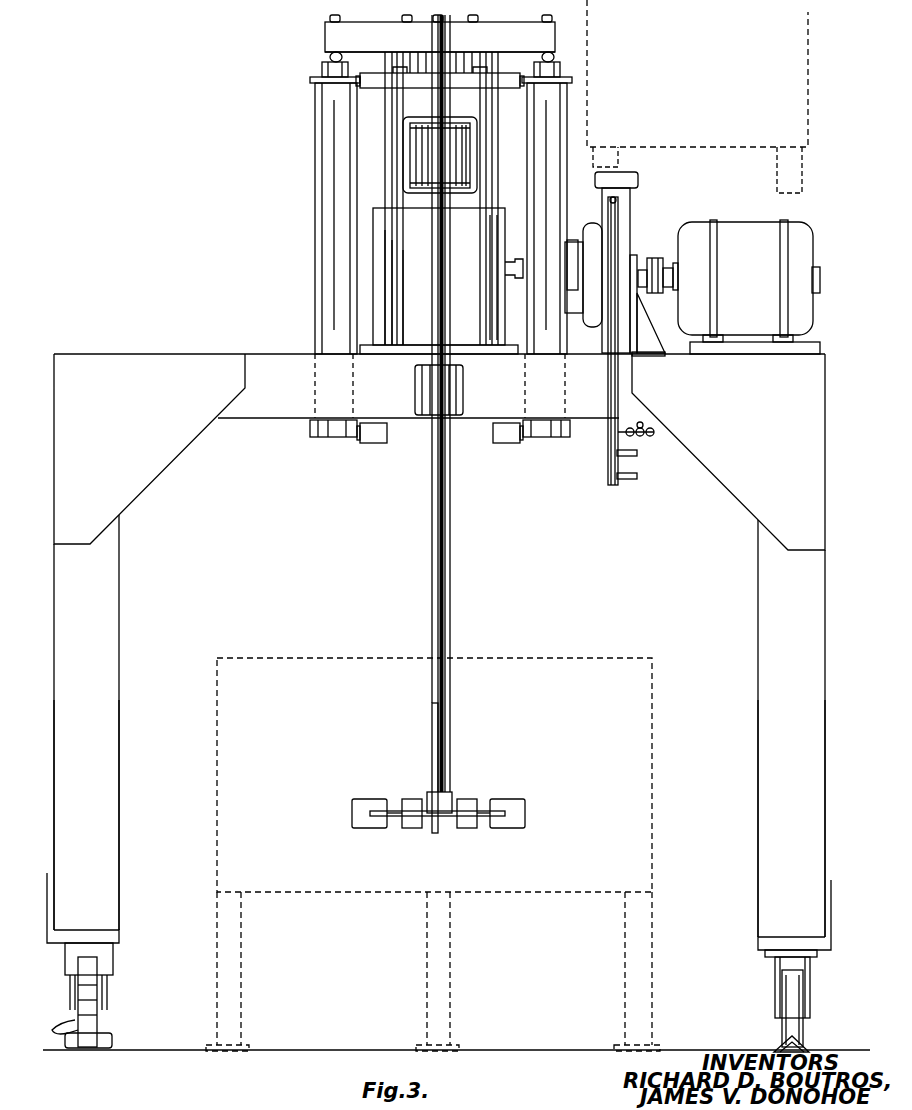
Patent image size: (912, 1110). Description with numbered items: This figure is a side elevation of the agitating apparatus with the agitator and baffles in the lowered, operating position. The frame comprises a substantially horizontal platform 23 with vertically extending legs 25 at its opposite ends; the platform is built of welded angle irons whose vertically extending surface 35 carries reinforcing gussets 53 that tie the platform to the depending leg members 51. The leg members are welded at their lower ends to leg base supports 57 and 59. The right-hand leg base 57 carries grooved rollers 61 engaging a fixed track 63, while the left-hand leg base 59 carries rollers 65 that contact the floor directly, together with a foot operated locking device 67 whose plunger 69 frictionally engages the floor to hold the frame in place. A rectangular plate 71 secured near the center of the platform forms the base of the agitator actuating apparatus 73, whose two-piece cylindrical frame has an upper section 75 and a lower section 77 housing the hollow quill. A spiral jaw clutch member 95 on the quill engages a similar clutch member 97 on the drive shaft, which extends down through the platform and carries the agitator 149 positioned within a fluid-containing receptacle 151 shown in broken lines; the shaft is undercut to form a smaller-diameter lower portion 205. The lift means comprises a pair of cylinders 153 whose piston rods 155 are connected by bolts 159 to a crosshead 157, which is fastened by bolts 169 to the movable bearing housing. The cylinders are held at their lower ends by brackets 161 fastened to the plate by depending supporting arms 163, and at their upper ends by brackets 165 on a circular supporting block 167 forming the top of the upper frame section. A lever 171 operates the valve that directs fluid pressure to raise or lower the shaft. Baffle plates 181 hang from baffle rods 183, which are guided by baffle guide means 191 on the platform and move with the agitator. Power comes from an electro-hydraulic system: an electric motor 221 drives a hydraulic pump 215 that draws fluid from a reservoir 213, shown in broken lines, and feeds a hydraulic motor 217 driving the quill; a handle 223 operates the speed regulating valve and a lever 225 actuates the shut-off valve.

The platform 23 is at (262, 342).
The legs 25 is at (130, 597).
The vertically extending surface 35 is at (288, 405).
The leg members 51 is at (100, 680).
The reinforcing gussets 53 is at (150, 452).
The leg base support 57 is at (768, 945).
The leg base support 59 is at (108, 940).
The grooved rollers 61 is at (788, 1027).
The fixed track 63 is at (782, 1050).
The rollers 65 is at (98, 1022).
The foot operated locking device 67 is at (58, 1028).
The plunger 69 is at (110, 1043).
The rectangular plate 71 is at (495, 354).
The actuating apparatus 73 is at (382, 145).
The upper cylinder frame section 75 is at (490, 146).
The lower cylinder frame section 77 is at (503, 220).
The spiral jaw clutch member 95 is at (420, 175).
The spiral jaw clutch member 97 is at (432, 160).
The agitator 149 is at (512, 813).
The fluid-containing receptacle 151 is at (460, 854).
The cylinders 153 is at (332, 180).
The piston rods 155 is at (328, 60).
The crosshead 157 is at (555, 38).
The bolts 159 is at (330, 20).
The brackets 161 is at (330, 440).
The depending supporting arms 163 is at (374, 444).
The brackets 165 is at (312, 80).
The circular supporting block 167 is at (522, 68).
The bolts 169 is at (440, 37).
The lever 171 is at (637, 453).
The baffle plates 181 is at (432, 751).
The baffle rods 183 is at (440, 524).
The baffle guide means 191 is at (415, 388).
The lower portion 205 is at (450, 774).
The reservoir 213 is at (760, 135).
The hydraulic pump 215 is at (620, 212).
The hydraulic motor 217 is at (575, 240).
The electric motor 221 is at (748, 235).
The handle 223 is at (654, 432).
The lever 225 is at (637, 476).